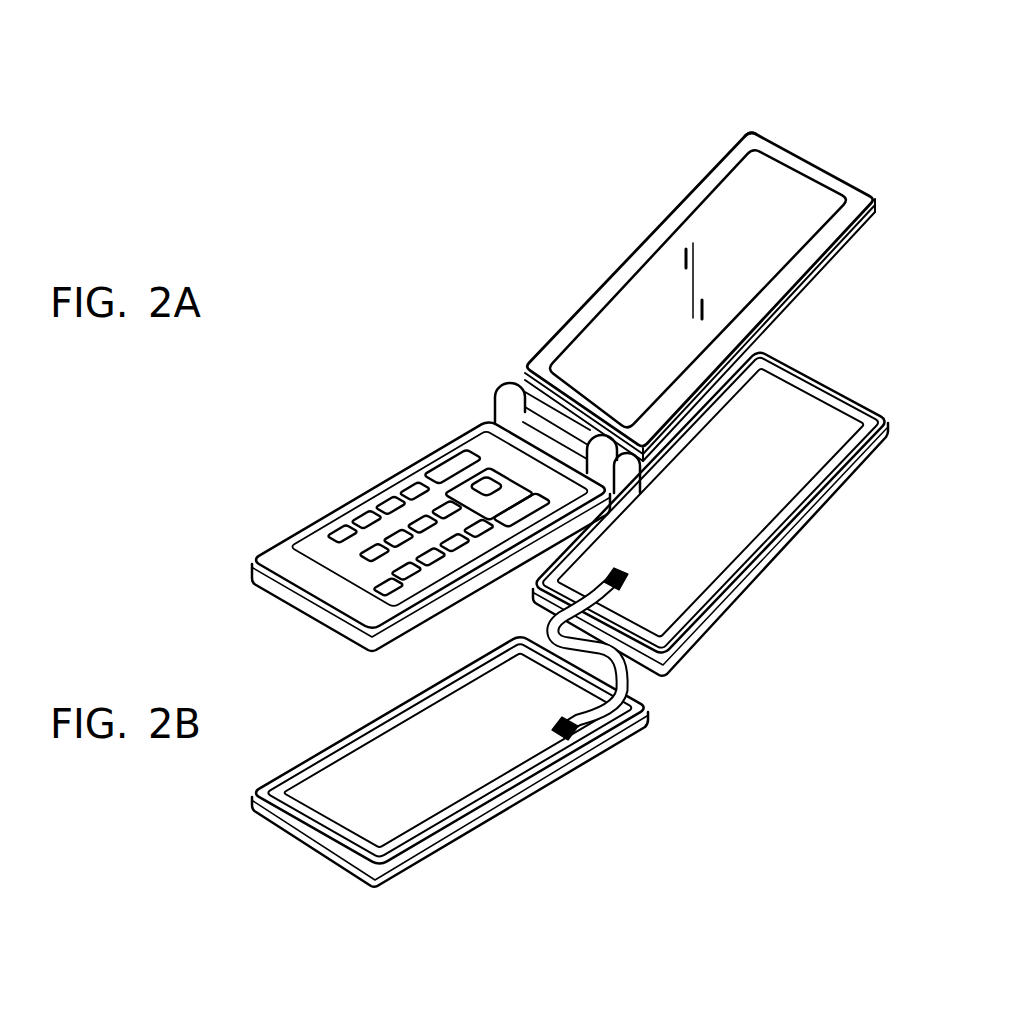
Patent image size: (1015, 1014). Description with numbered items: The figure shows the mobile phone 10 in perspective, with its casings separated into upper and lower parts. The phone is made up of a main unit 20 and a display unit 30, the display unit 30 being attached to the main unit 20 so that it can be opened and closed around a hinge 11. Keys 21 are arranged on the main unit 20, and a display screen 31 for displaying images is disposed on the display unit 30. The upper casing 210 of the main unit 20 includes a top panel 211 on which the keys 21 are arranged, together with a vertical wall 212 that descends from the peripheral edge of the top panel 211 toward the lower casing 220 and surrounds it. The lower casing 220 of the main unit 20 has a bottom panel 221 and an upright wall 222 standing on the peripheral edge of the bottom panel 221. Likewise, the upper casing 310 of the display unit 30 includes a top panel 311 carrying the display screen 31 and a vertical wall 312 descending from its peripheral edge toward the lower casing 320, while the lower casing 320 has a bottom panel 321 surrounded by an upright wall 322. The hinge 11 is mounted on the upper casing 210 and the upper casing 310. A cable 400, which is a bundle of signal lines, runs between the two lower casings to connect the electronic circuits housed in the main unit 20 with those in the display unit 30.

In FIG. 2A, the mobile phone 10 is at (410, 245).
In FIG. 2A, the hinge 11 is at (478, 380).
In FIG. 2A, the main unit 20 is at (250, 480).
In FIG. 2A, the keys 21 is at (372, 505).
In FIG. 2A, the upper casing 210 is at (417, 467).
In FIG. 2A, the top panel 211 is at (480, 447).
In FIG. 2A, the vertical wall 212 is at (300, 607).
In FIG. 2A, the display unit 30 is at (628, 208).
In FIG. 2A, the display screen 31 is at (722, 197).
In FIG. 2A, the upper casing 310 is at (806, 153).
In FIG. 2A, the top panel 311 is at (750, 131).
In FIG. 2A, the vertical wall 312 is at (852, 238).
In FIG. 2B, the lower casing 220 is at (523, 793).
In FIG. 2B, the bottom panel 221 is at (340, 825).
In FIG. 2B, the upright wall 222 is at (317, 765).
In FIG. 2B, the lower casing 320 is at (822, 371).
In FIG. 2B, the bottom panel 321 is at (823, 433).
In FIG. 2B, the upright wall 322 is at (838, 482).
In FIG. 2B, the cable 400 is at (650, 690).